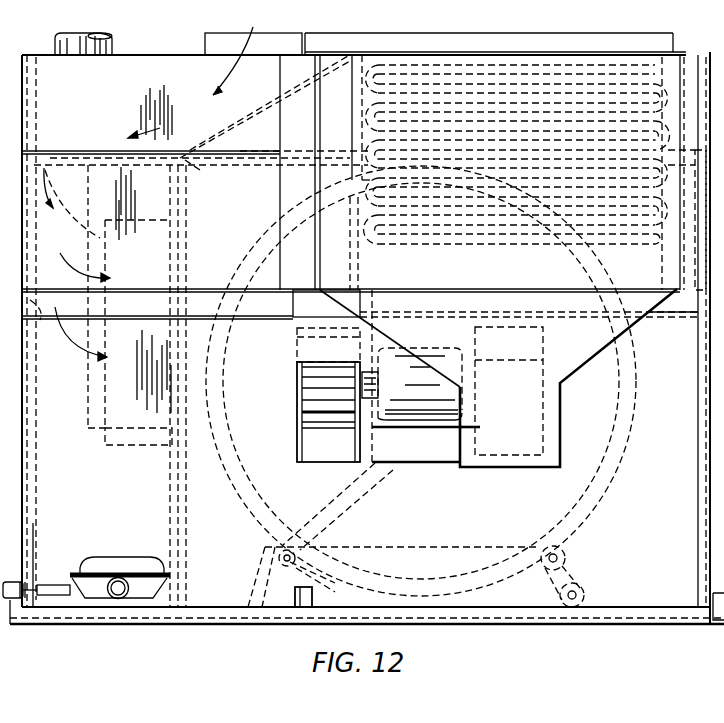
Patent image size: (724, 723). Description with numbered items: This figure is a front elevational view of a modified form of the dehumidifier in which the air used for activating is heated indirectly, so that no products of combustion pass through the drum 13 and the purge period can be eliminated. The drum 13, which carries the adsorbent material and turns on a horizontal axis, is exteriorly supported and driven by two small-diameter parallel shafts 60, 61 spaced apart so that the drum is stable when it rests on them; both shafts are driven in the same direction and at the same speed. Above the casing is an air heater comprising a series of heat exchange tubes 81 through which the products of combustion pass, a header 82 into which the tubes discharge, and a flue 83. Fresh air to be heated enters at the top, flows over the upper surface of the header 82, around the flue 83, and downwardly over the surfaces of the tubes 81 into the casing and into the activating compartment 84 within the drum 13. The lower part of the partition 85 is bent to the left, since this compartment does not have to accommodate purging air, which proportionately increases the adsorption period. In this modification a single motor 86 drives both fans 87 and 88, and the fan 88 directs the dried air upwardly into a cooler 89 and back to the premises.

The drum 13 is at (620, 443).
The shaft 60 is at (288, 566).
The shaft 61 is at (567, 558).
The heat exchange tubes 81 is at (122, 440).
The header 82 is at (97, 237).
The flue 83 is at (107, 86).
The activating compartment 84 is at (278, 357).
The partition 85 is at (382, 297).
The motor 86 is at (413, 413).
The fan 87 is at (312, 403).
The fan 88 is at (530, 420).
The cooler 89 is at (22, 44).